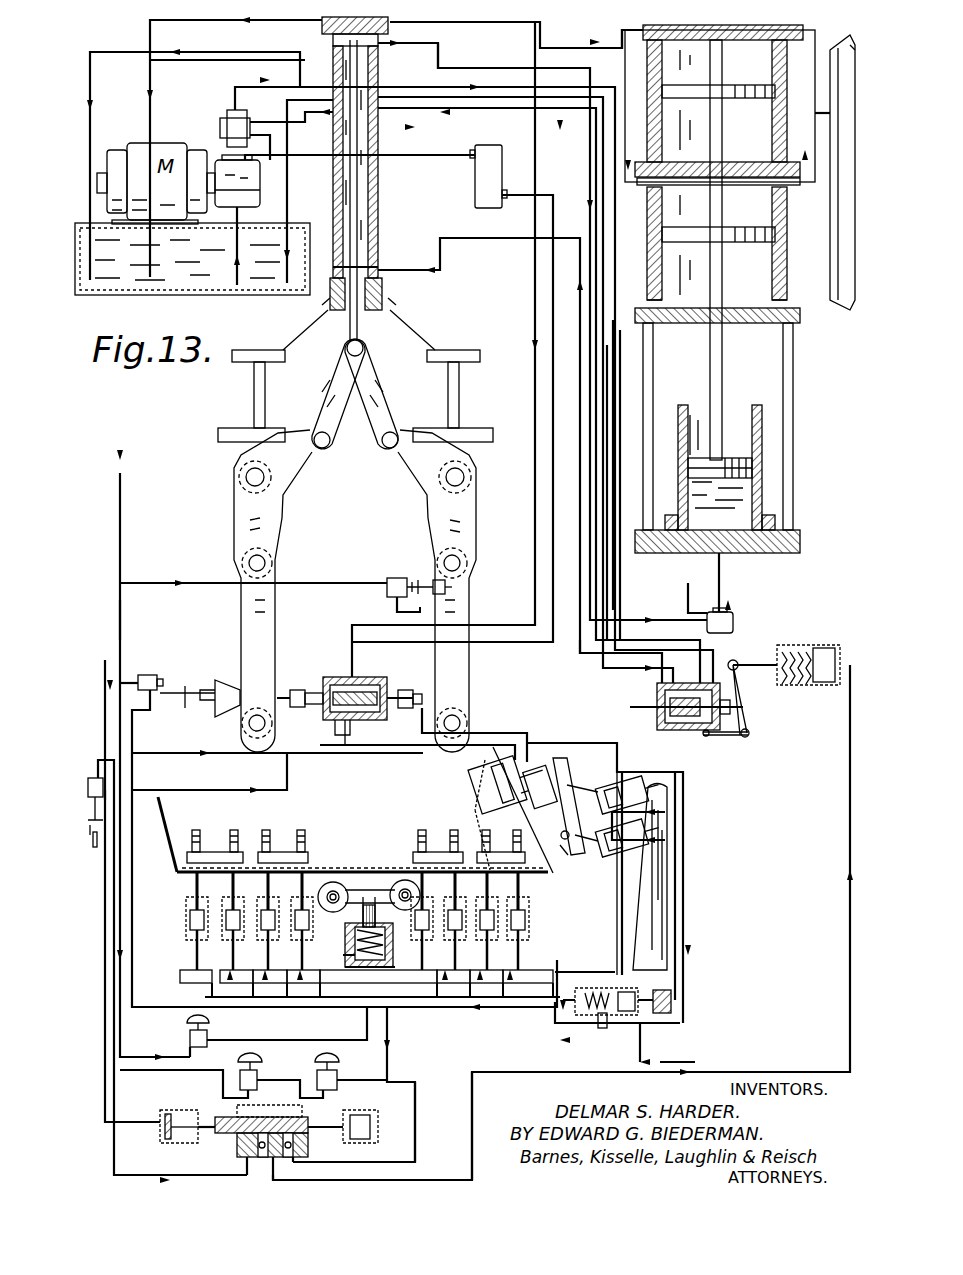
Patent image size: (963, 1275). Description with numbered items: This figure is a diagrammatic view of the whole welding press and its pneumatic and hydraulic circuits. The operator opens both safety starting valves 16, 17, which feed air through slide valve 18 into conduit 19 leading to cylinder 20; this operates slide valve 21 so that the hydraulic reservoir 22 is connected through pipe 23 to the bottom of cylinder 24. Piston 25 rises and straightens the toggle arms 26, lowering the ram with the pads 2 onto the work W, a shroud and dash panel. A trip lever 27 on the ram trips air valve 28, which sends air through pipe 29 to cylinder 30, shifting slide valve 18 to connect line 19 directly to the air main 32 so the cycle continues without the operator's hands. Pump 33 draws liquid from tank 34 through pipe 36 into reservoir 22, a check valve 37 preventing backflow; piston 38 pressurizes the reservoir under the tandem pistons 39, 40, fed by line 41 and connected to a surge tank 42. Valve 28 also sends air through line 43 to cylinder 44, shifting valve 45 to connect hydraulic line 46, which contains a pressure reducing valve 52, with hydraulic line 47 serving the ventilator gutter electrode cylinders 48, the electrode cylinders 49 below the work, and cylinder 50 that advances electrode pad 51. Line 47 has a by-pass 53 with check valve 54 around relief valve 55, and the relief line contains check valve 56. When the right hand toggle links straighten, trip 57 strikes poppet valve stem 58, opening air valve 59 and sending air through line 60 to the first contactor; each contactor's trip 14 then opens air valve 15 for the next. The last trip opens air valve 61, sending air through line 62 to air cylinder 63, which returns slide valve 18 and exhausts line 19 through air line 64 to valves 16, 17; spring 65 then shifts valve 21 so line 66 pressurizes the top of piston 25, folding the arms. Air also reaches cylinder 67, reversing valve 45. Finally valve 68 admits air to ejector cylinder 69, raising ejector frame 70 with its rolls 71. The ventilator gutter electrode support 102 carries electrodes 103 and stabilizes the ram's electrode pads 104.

The pads 2 is at (275, 848).
The work W is at (320, 868).
The trip portion 14 is at (98, 840).
The air valve 15 is at (108, 800).
The safety starting valve 16 is at (257, 1078).
The safety starting valve 17 is at (337, 1078).
The slide valve 18 is at (222, 1142).
The conduit 19 is at (472, 1115).
The cylinder 20 is at (822, 648).
The slide valve 21 is at (690, 735).
The hydraulic reservoir 22 is at (762, 478).
The pipe 23 is at (578, 660).
The cylinder 24 is at (380, 200).
The piston 25 is at (322, 30).
The toggle arms 26 is at (238, 515).
The trip lever 27 is at (180, 690).
The air valve 28 is at (148, 675).
The pipe 29 is at (130, 870).
The cylinder 30 is at (370, 1104).
The air main 32 is at (122, 610).
The pump 33 is at (215, 140).
The tank 34 is at (208, 295).
The pipe 36 is at (620, 345).
The check valve 37 is at (733, 615).
The piston 38 is at (752, 462).
The tandem piston 39 is at (745, 227).
The tandem piston 40 is at (745, 85).
The line 41 is at (600, 48).
The surge tank 42 is at (840, 232).
The line 43 is at (190, 754).
The cylinder 44 is at (410, 690).
The valve 45 is at (350, 745).
The hydraulic line 46 is at (500, 625).
The hydraulic line 47 is at (683, 850).
The ventilator gutter electrode cylinders 48 is at (612, 785).
The electrode cylinders 49 is at (530, 925).
The cylinder 50 is at (478, 805).
The electrode pad 51 is at (548, 765).
The pressure reducing valve 52 is at (485, 190).
The by-pass 53 is at (667, 1028).
The check valve 54 is at (600, 1028).
The valve 55 is at (585, 988).
The check valve 56 is at (665, 990).
The trip 57 is at (450, 592).
The poppet valve stem 58 is at (420, 580).
The air valve 59 is at (395, 578).
The line 60 is at (390, 612).
The air valve 61 is at (90, 778).
The line 62 is at (100, 828).
The air cylinder 63 is at (168, 1112).
The air line 64 is at (417, 1100).
The spring 65 is at (795, 646).
The line 66 is at (462, 68).
The cylinder 67 is at (310, 680).
The valve 68 is at (209, 1025).
The ejector cylinder 69 is at (400, 880).
The ejector frame 70 is at (369, 895).
The rolls 71 is at (336, 885).
The ventilator gutter electrode support 102 is at (667, 910).
The electrodes 103 is at (565, 852).
The electrode pads 104 is at (575, 760).